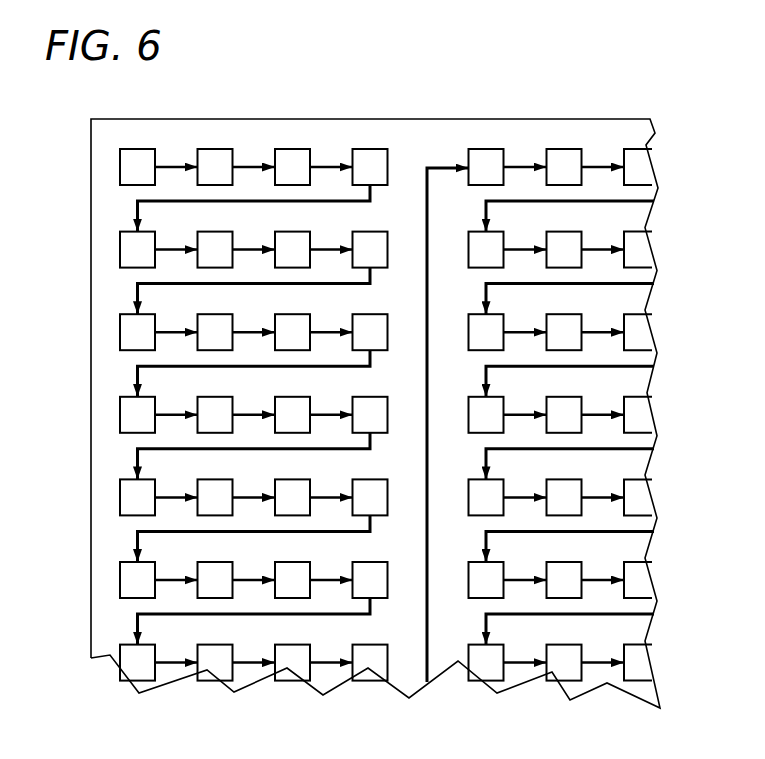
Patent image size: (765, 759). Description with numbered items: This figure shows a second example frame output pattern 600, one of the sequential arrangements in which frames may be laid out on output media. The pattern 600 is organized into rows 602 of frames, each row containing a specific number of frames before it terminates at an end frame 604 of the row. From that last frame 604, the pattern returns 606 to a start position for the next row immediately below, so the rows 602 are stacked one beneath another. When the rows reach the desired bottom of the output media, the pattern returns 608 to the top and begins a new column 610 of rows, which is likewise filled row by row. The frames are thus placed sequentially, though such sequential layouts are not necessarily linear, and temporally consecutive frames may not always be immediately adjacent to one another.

The second example frame output pattern 600 is at (428, 118).
The rows of frames 602 is at (120, 161).
The last memory block of row 604 is at (367, 149).
The return to start position 606 is at (137, 201).
The return to top 608 is at (427, 655).
The new column 610 is at (485, 148).